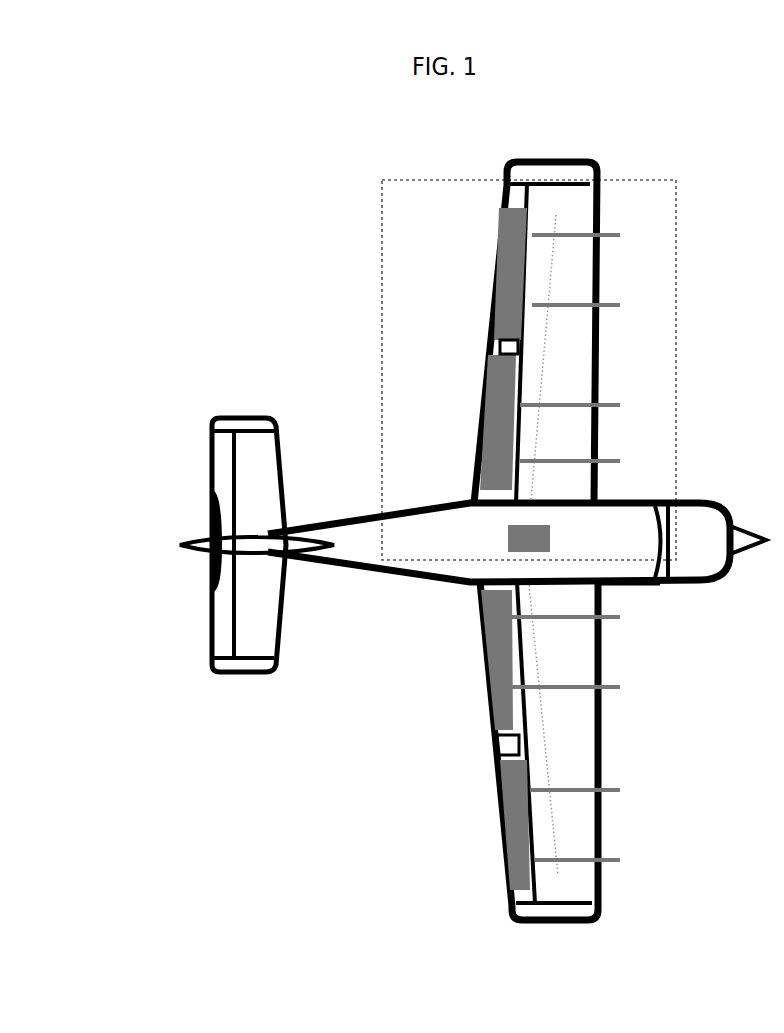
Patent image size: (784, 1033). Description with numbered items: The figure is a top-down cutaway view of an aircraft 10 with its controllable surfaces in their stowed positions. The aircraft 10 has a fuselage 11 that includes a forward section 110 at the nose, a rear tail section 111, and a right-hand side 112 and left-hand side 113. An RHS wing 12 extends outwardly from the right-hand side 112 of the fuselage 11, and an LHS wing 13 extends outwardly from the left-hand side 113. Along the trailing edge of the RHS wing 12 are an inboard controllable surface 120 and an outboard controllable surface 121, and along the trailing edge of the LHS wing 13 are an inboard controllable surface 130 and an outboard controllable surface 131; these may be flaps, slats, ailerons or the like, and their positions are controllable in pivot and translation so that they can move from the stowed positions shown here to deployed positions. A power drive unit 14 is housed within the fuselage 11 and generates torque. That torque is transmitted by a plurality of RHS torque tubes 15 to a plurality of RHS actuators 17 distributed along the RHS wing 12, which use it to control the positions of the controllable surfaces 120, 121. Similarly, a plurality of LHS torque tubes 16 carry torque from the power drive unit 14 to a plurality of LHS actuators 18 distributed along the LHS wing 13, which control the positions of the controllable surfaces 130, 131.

The aircraft 10 is at (208, 412).
The fuselage 11 is at (375, 558).
The forward section 110 is at (719, 558).
The rear tail section 111 is at (212, 568).
The right-hand-side 112 is at (628, 588).
The left-hand-side 113 is at (700, 500).
The RHS wing 12 is at (585, 897).
The inboard controllable surface 120 is at (500, 657).
The outboard controllable surface 121 is at (510, 852).
The LHS wing 13 is at (580, 203).
The inboard controllable surface 130 is at (490, 460).
The outboard controllable surface 131 is at (512, 266).
The power drive unit 14 is at (510, 556).
The RHS torque tubes 15 is at (532, 647).
The LHS torque tubes 16 is at (560, 430).
The RHS actuators 17 is at (558, 850).
The LHS actuators 18 is at (560, 247).